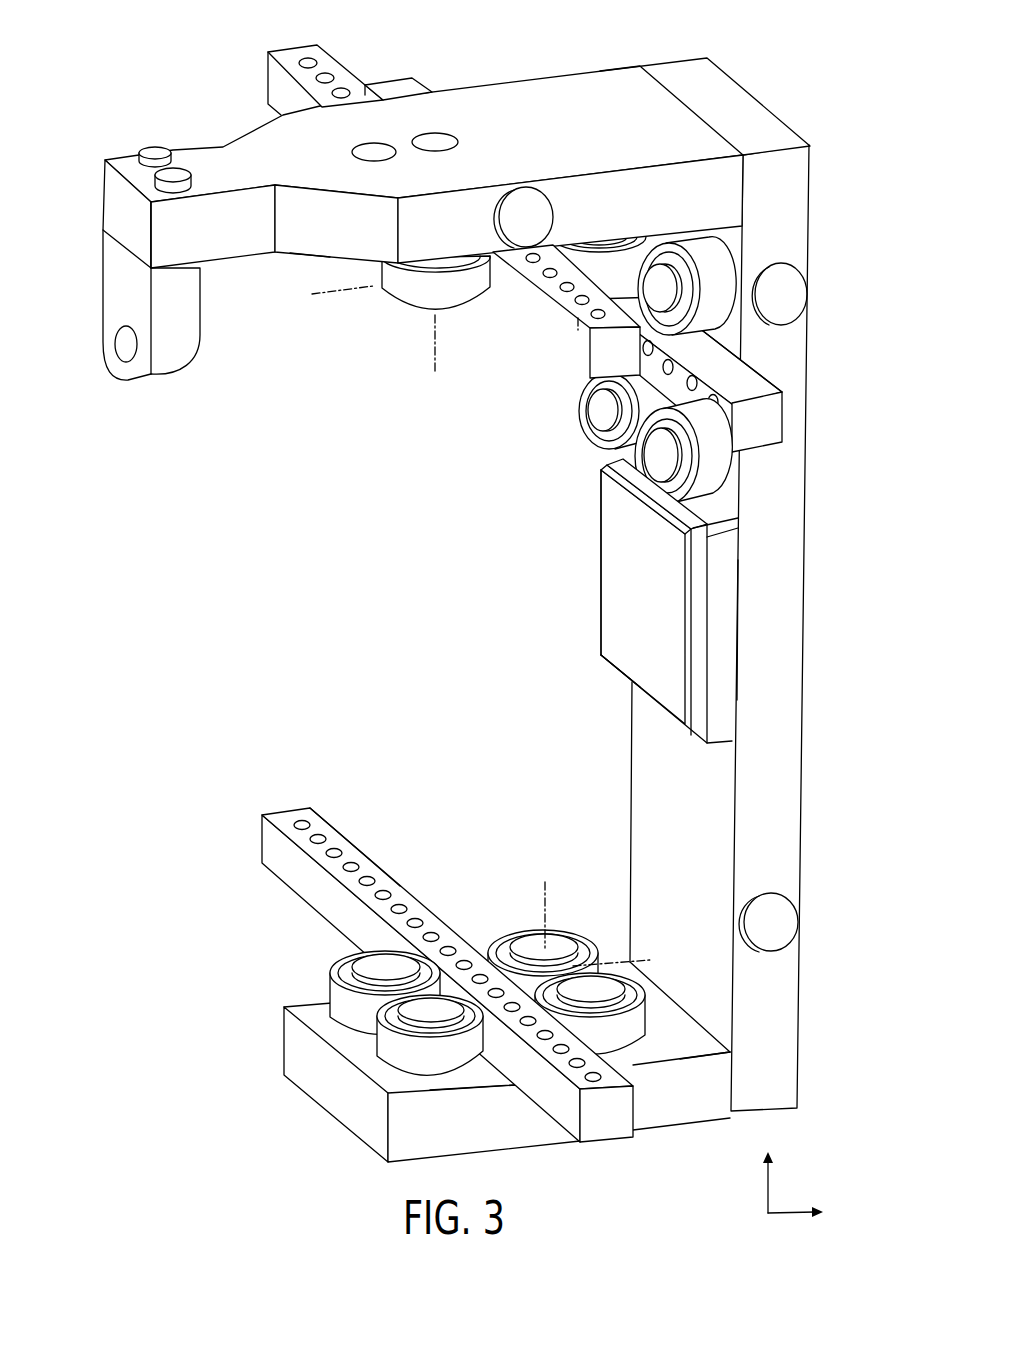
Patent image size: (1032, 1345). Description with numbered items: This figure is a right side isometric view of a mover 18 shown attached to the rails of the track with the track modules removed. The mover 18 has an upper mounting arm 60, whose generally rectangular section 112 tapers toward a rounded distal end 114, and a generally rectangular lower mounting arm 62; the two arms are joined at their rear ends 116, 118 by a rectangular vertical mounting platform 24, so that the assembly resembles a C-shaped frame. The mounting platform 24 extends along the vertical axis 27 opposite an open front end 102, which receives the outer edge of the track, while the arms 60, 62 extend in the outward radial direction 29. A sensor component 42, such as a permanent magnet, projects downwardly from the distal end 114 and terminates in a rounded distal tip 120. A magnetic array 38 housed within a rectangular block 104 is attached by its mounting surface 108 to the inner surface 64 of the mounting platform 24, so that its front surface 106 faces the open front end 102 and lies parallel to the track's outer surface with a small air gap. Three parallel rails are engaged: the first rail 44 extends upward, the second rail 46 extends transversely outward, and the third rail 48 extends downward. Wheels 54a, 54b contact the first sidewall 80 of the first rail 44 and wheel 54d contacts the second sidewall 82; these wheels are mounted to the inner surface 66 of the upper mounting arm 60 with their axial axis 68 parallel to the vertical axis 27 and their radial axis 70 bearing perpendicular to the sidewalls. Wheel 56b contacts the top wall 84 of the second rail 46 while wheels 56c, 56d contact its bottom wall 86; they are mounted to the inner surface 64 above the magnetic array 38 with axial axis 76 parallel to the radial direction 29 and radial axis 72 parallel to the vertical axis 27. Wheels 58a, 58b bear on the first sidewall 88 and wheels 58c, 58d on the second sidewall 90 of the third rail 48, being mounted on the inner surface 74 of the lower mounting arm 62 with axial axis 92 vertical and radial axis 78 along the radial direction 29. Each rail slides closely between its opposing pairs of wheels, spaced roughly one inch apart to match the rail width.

The mover 18 is at (744, 44).
The mounting platform 24 is at (775, 742).
The mounting surface 108 is at (742, 638).
The upper mounting arm 60 is at (556, 99).
The rectangular section 112 is at (608, 108).
The rear end 116 is at (670, 112).
The distal end 114 is at (128, 165).
The first rail 44 is at (321, 63).
The second sidewall 82 is at (347, 73).
The sensor component 42 is at (165, 323).
The rounded distal tip 120 is at (160, 377).
The inner surface 66 is at (312, 258).
The radial axis 70 is at (341, 290).
The lateral wheel 54a is at (372, 267).
The lateral wheel 54b is at (417, 292).
The lateral wheel 54d is at (630, 252).
The axial axis 68 is at (433, 343).
The first sidewall 80 is at (533, 313).
The lateral wheel 56b is at (713, 260).
The lateral wheel 56c is at (592, 443).
The lateral wheel 56d is at (720, 476).
The second rail 46 is at (727, 383).
The top wall 84 is at (717, 363).
The bottom wall 86 is at (760, 442).
The magnetic array 38 is at (674, 601).
The axial axis 76 is at (627, 477).
The rectangular block 104 is at (570, 649).
The front surface 106 is at (624, 562).
The radial axis 72 is at (706, 536).
The inner surface 64 is at (661, 822).
The open front end 102 is at (255, 625).
The inner surface 74 is at (743, 1046).
The rear end 118 is at (692, 1037).
The lateral wheel 58a is at (340, 1000).
The lateral wheel 58b is at (393, 1048).
The lateral wheel 58c is at (543, 930).
The lateral wheel 58d is at (627, 1030).
The axial axis 92 is at (543, 927).
The radial axis 78 is at (650, 960).
The lower mounting arm 62 is at (434, 1094).
The first sidewall 88 is at (536, 1082).
The second sidewall 90 is at (447, 958).
The third rail 48 is at (333, 843).
The vertical axis 27 is at (767, 1190).
The outwardly radial direction 29 is at (790, 1214).